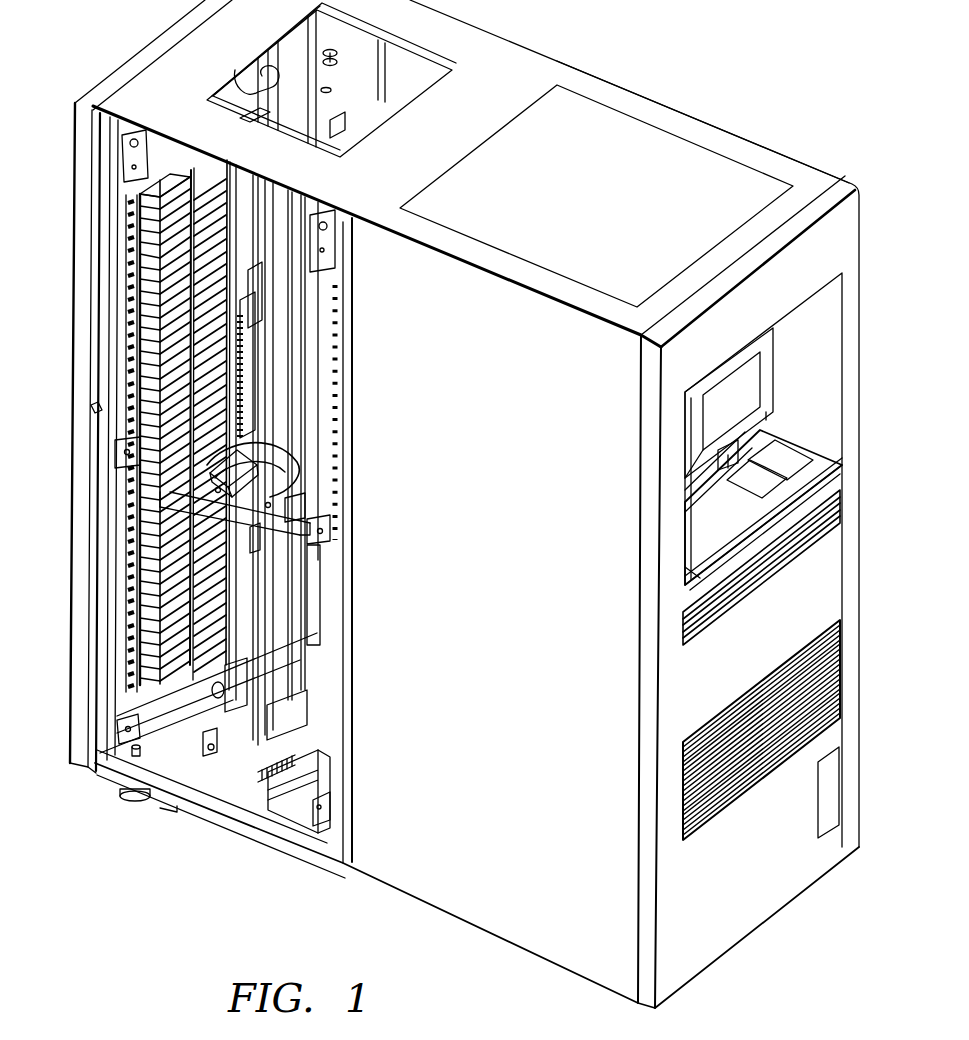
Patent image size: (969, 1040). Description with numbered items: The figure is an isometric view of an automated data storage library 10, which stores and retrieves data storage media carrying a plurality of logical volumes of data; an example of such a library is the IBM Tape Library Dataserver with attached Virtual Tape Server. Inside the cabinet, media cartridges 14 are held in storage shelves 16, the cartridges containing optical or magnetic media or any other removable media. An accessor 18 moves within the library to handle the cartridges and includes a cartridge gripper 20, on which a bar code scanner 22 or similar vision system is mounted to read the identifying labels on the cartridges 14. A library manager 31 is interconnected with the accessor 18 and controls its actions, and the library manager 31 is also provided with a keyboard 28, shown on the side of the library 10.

The automated data storage library 10 is at (512, 57).
The media cartridges 14 is at (148, 218).
The storage shelves 16 is at (80, 405).
The accessor 18 is at (210, 728).
The cartridge gripper 20 is at (325, 543).
The bar code scanner 22 is at (287, 460).
The keyboard 28 is at (815, 467).
The library manager 31 is at (833, 369).